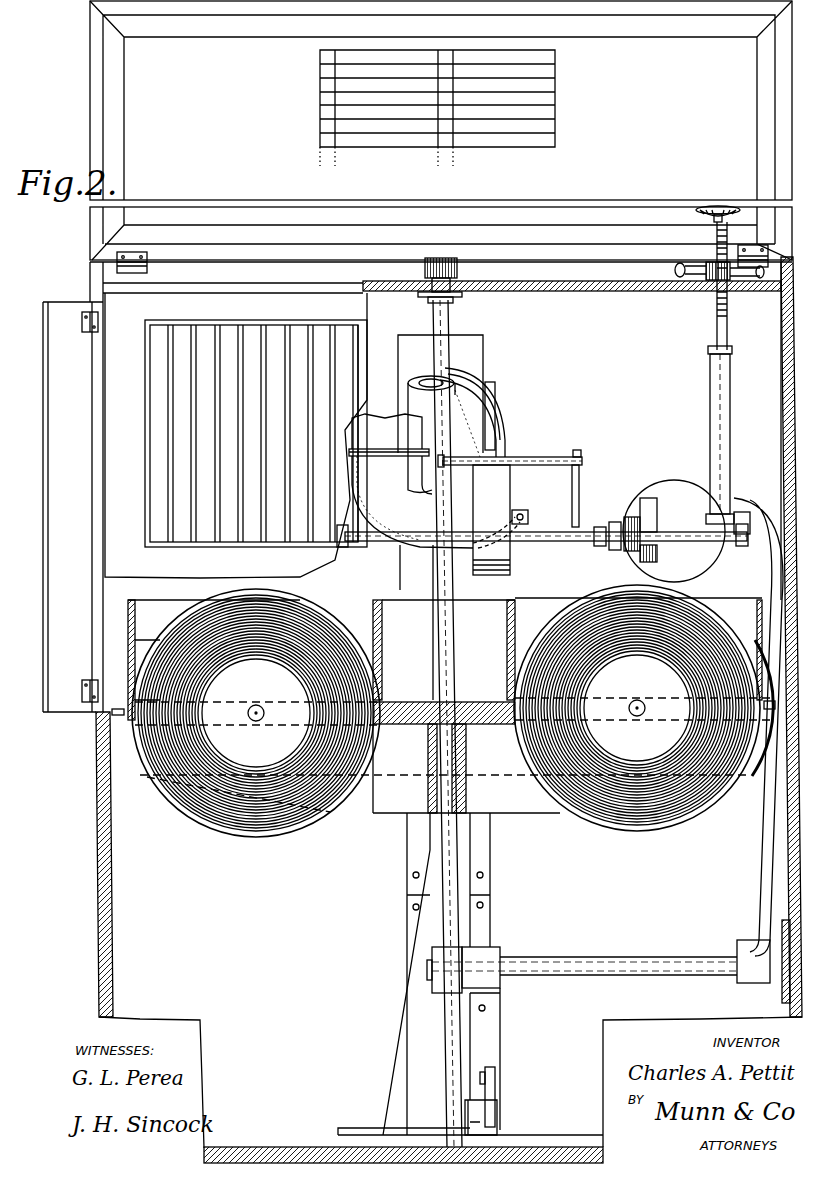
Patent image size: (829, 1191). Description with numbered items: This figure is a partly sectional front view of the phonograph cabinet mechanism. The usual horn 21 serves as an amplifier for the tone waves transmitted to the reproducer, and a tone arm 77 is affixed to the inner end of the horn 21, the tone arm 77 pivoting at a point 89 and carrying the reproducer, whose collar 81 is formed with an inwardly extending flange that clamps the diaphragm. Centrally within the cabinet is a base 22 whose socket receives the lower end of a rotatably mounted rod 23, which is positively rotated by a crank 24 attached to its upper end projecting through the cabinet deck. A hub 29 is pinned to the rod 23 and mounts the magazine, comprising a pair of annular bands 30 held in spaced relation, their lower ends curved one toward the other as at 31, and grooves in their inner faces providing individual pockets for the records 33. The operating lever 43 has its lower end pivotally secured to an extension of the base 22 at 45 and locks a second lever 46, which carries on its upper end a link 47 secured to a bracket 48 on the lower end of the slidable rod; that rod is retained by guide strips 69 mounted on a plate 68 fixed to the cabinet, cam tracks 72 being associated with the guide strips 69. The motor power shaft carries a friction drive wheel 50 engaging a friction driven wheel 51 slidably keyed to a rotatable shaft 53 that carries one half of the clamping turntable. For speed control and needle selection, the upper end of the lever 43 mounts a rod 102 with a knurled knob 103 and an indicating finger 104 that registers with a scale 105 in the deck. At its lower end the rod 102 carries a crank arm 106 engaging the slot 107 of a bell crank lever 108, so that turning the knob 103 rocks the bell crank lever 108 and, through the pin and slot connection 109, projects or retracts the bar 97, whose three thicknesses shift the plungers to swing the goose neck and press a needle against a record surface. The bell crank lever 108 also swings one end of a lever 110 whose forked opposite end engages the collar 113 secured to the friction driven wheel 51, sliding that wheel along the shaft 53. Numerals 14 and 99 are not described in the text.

The door 14 is at (114, 716).
The horn 21 is at (366, 432).
The base 22 is at (412, 1033).
The rotatably mounted rod 23 is at (445, 334).
The crank 24 is at (446, 582).
The hub 29 is at (436, 748).
The annular bands 30 is at (133, 613).
The curved lower ends of bands 31 is at (745, 768).
The records 33 is at (231, 818).
The operating lever 43 is at (768, 845).
The pivot 45 is at (690, 965).
The second lever 46 is at (500, 1014).
The link 47 is at (492, 1100).
The bracket 48 is at (465, 1121).
The friction drive wheel 50 is at (690, 580).
The friction driven wheel 51 is at (647, 500).
The rotatable shaft 53 is at (535, 542).
The plate 68 is at (483, 845).
The guide strips 69 is at (420, 928).
The cam tracks 72 is at (472, 943).
The tone arm 77 is at (502, 424).
The collar 81 is at (418, 412).
The pivot point of tone arm 89 is at (525, 516).
The bar 97 is at (538, 460).
The plate 99 is at (495, 397).
The rod 102 is at (722, 325).
The knurled knob 103 is at (718, 205).
The indicating finger 104 is at (742, 272).
The scale 105 is at (702, 280).
The crank arm 106 is at (745, 515).
The slot 107 is at (742, 545).
The bell crank lever 108 is at (598, 543).
The pin and slot connection 109 is at (580, 457).
The lever 110 is at (632, 518).
The collar 113 is at (612, 528).